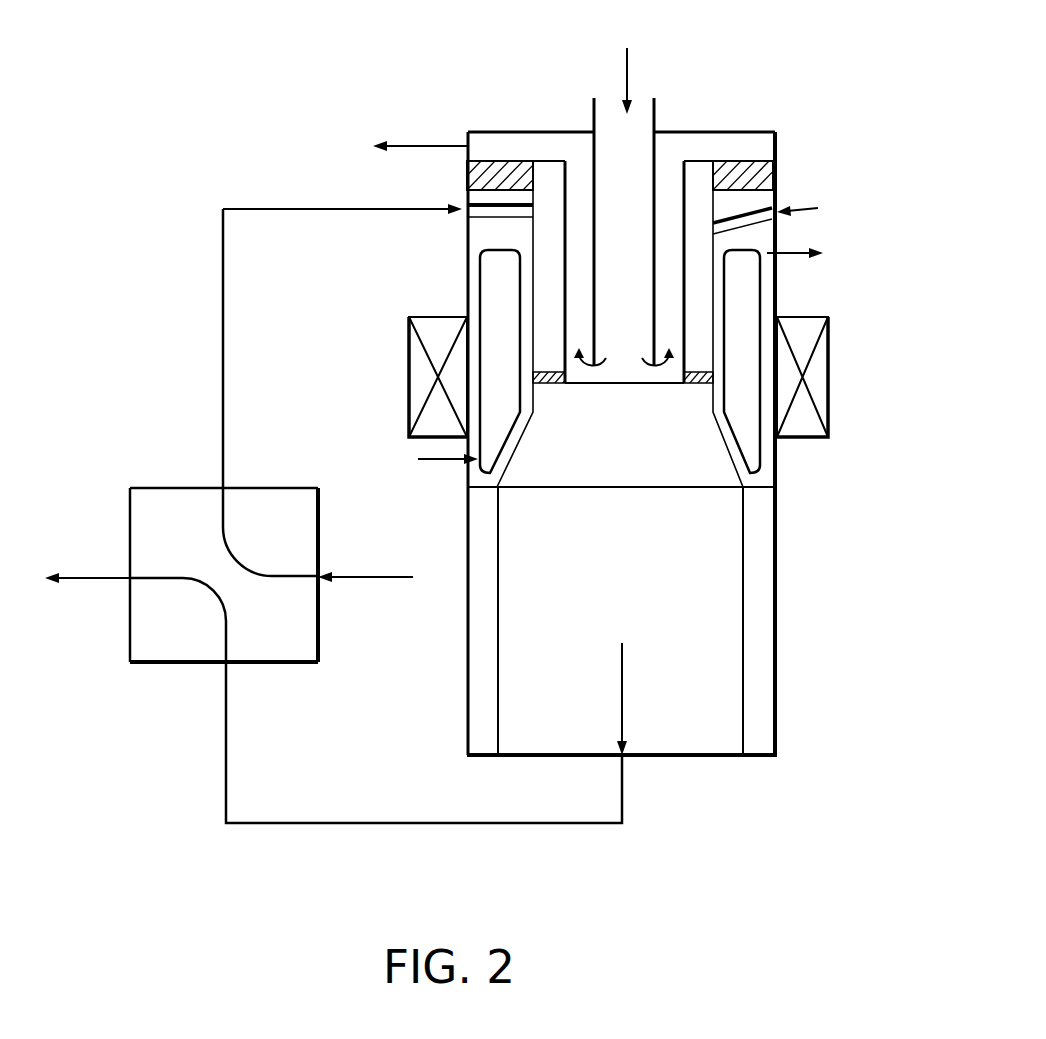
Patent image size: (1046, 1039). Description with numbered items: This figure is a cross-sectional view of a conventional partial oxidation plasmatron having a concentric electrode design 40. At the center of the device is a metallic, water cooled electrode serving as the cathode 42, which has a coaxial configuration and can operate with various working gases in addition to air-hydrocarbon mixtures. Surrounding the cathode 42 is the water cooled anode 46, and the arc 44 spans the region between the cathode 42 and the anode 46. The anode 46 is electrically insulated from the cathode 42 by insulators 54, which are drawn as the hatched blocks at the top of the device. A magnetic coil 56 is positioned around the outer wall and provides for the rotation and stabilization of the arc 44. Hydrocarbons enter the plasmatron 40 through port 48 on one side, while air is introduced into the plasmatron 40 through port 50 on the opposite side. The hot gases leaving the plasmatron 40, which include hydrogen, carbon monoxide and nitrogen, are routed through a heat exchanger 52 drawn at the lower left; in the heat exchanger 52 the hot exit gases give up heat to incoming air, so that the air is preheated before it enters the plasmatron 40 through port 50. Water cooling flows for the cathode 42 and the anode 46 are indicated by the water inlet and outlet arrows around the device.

The partial oxidation plasmatron with concentric electrode design 40 is at (691, 101).
The water cooled electrode (cathode) 42 is at (687, 170).
The arc 44 is at (545, 386).
The water cooled anode 46 is at (777, 278).
The port 48 is at (772, 203).
The port 50 is at (468, 215).
The heat exchanger 52 is at (193, 488).
The insulators 54 is at (472, 187).
The magnetic coil 56 is at (822, 366).